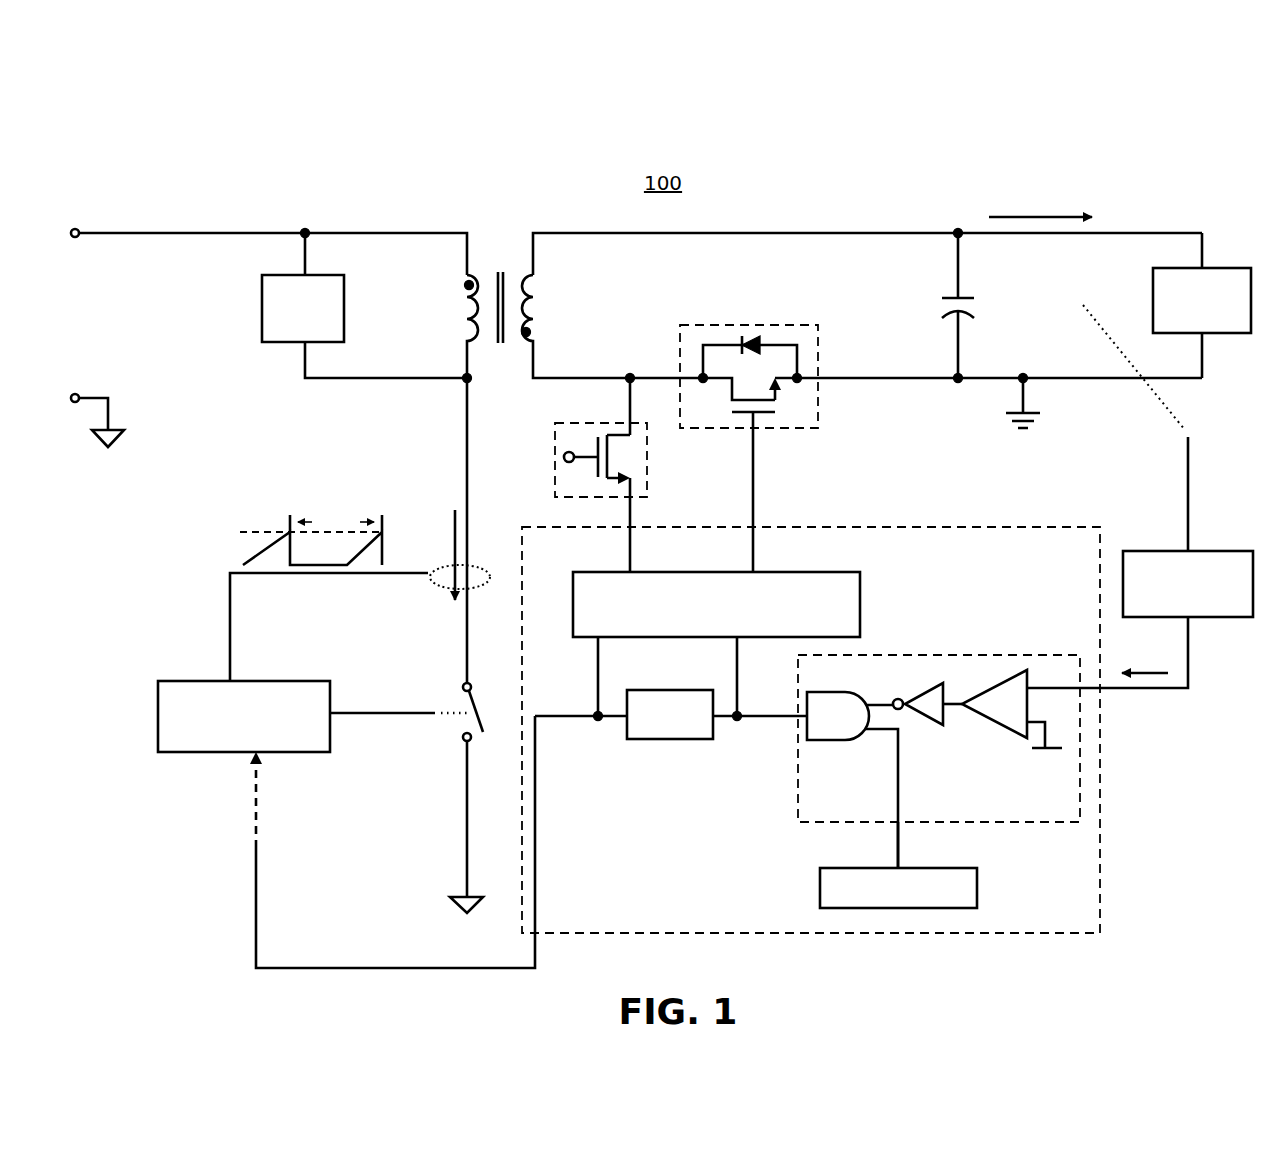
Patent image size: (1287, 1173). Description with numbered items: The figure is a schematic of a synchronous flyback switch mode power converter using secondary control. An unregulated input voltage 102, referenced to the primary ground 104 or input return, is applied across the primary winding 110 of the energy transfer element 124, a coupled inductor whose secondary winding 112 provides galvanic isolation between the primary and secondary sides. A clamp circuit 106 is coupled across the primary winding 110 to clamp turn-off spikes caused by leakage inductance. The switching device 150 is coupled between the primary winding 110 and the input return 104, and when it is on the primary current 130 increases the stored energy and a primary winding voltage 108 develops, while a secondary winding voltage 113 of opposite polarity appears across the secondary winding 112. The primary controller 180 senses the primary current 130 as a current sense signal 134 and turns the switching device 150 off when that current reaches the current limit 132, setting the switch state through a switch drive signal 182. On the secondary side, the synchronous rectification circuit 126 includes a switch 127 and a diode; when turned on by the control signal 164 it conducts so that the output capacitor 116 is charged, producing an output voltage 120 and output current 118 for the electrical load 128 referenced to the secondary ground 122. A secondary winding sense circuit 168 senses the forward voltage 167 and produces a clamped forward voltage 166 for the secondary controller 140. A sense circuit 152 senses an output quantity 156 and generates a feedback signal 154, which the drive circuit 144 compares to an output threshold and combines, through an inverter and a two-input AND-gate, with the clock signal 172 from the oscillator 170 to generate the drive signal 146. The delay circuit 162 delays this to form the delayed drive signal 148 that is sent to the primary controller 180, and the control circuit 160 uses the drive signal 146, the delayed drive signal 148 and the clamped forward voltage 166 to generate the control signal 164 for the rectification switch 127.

The input voltage 102 is at (105, 325).
The primary ground 104 is at (125, 425).
The clamp circuit 106 is at (280, 350).
The primary winding voltage 108 is at (388, 290).
The primary winding 110 is at (468, 310).
The secondary winding 112 is at (535, 280).
The secondary winding voltage 113 is at (588, 312).
The output capacitor 116 is at (935, 313).
The output current 118 is at (1022, 208).
The output voltage 120 is at (1013, 300).
The secondary ground 122 is at (1040, 418).
The energy transfer element 124 is at (500, 370).
The synchronous rectification circuit 126 is at (785, 362).
The switch S2 127 is at (785, 400).
The electrical load 128 is at (1225, 262).
The primary current 130 is at (452, 520).
The current limit 132 is at (265, 525).
The current sense signal 134 is at (228, 640).
The secondary controller 140 is at (995, 522).
The drive circuit 144 is at (922, 650).
The drive signal 146 is at (775, 722).
The delayed drive signal 148 is at (553, 727).
The switching device S1 150 is at (458, 690).
The sense circuit 152 is at (1235, 545).
The feedback signal 154 is at (1130, 695).
The output quantity 156 is at (1222, 465).
The control circuit 160 is at (865, 620).
The delay circuit 162 is at (650, 745).
The control signal 164 is at (760, 480).
The clamped forward voltage 166 is at (635, 520).
The forward voltage 167 is at (625, 390).
The secondary winding sense circuit 168 is at (550, 440).
The oscillator 170 is at (815, 890).
The clock signal 172 is at (892, 835).
The primary controller 180 is at (285, 675).
The switch drive signal 182 is at (365, 720).